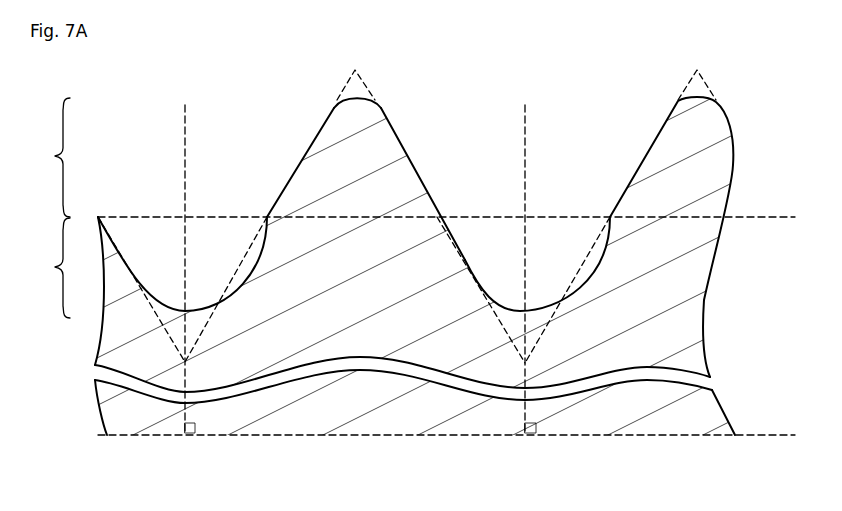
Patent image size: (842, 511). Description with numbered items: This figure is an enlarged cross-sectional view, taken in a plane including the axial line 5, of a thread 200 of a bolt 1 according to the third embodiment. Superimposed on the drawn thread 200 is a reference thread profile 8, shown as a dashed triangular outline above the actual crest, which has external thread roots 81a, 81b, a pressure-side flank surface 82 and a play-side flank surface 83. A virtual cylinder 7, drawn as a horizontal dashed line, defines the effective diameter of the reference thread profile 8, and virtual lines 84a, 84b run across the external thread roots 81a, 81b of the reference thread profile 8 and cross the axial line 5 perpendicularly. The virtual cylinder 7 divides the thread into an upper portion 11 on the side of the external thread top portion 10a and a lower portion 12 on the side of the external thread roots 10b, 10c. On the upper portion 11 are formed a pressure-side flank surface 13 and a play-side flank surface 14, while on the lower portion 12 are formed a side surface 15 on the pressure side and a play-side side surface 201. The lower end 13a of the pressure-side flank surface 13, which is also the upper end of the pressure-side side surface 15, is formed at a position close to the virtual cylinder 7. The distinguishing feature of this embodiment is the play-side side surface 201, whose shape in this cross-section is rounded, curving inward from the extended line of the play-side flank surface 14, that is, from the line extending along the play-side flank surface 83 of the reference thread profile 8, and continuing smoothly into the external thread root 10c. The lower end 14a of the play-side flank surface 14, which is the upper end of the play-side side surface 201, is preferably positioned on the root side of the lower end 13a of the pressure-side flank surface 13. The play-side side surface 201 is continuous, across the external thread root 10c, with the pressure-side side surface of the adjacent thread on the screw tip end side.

The thread 200 is at (313, 62).
The reference thread profile 8 is at (367, 88).
The external thread top portion 10a is at (346, 97).
The external thread root 10b is at (183, 310).
The external thread root 10c is at (535, 308).
The pressure-side flank surface 13 is at (284, 180).
The lower end of the pressure-side flank surface 13a is at (265, 216).
The play-side flank surface 14 is at (427, 190).
The lower end of the play-side flank surface 14a is at (457, 235).
The virtual cylinder 7 is at (97, 216).
The axial line 5 is at (750, 434).
The virtual line 84a is at (183, 128).
The virtual line 84b is at (527, 123).
The side surface on a pressure side 15 is at (230, 293).
The external thread root 81a is at (185, 362).
The external thread root 81b is at (525, 363).
The pressure-side flank surface 82 is at (247, 257).
The play-side flank surface 83 is at (460, 253).
The play-side side surface 201 is at (468, 272).
The bolt 1 is at (703, 320).
The upper portion 11 is at (49, 157).
The lower portion 12 is at (49, 268).